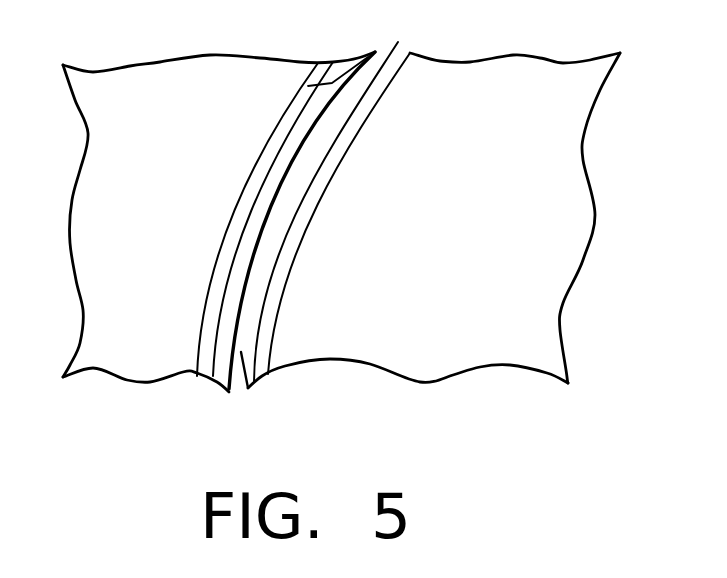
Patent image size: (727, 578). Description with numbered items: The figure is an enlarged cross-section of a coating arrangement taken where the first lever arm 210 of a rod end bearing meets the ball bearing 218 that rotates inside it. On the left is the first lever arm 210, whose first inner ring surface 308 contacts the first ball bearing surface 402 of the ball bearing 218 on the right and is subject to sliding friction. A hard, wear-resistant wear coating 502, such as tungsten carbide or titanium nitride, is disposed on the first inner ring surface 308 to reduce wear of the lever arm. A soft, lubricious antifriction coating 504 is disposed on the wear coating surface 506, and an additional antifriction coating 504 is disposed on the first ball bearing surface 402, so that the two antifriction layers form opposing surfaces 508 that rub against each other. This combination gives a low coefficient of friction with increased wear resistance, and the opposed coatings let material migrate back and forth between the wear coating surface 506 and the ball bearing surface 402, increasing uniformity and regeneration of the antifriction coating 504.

The first lever arm 210 is at (198, 262).
The ball bearing 218 is at (437, 300).
The first inner ring surface 308 is at (304, 92).
The first ball bearing surface 402 is at (373, 118).
The wear coating 502 is at (241, 198).
The antifriction coating 504 is at (300, 128).
The wear coating surface 506 is at (398, 42).
The opposing surfaces 508 is at (247, 386).